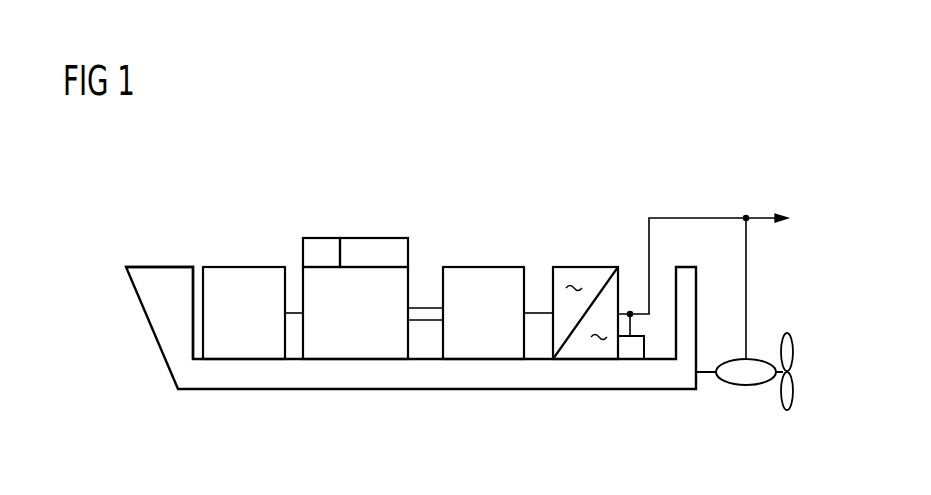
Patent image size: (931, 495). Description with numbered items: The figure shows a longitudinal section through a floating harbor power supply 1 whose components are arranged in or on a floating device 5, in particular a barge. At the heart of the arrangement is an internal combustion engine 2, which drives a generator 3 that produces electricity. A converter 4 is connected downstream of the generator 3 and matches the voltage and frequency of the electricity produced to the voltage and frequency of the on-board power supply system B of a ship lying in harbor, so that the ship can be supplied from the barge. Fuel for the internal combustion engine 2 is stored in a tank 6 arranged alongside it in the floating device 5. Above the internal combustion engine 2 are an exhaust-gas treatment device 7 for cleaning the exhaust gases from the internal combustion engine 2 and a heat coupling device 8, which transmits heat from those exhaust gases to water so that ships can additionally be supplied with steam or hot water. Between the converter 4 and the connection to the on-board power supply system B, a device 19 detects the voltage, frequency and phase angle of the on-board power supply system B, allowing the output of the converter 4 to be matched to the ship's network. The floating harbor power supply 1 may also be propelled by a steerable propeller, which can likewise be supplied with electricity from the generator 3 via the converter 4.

The floating harbor power supply 1 is at (182, 172).
The internal combustion engine 2 is at (409, 274).
The generator 3 is at (481, 267).
The converter 4 is at (581, 267).
The floating device 5 is at (163, 267).
The tank 6 is at (243, 267).
The exhaust-gas treatment device 7 is at (320, 238).
The heat coupling device 8 is at (373, 238).
The device for detection of the voltage, frequency and phase angle 19 is at (644, 343).
The on-board power supply system B is at (751, 308).